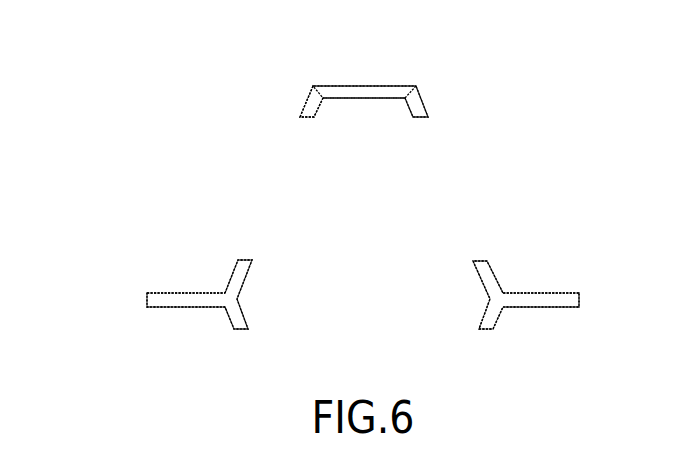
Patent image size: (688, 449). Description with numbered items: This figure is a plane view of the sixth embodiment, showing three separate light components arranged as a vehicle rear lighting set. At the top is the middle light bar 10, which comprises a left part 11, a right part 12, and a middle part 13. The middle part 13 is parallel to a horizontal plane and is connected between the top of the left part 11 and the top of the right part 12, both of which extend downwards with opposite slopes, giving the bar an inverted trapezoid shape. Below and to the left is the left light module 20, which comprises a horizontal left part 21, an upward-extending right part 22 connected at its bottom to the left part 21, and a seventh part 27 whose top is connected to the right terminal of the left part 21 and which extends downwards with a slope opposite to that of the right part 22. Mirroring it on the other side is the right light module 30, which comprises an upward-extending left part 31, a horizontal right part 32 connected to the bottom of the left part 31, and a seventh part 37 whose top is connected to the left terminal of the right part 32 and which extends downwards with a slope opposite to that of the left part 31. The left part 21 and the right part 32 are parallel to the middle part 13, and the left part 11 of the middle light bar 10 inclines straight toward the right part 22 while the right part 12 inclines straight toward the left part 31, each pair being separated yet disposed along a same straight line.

The middle light bar 10 is at (335, 60).
The left part 11 is at (310, 110).
The right part 12 is at (420, 107).
The middle part 13 is at (375, 93).
The left light module 20 is at (182, 250).
The left part 21 is at (155, 295).
The right part 22 is at (242, 272).
The seventh part 27 is at (242, 320).
The right light module 30 is at (540, 250).
The left part 31 is at (483, 270).
The right part 32 is at (555, 295).
The seventh part 37 is at (482, 318).